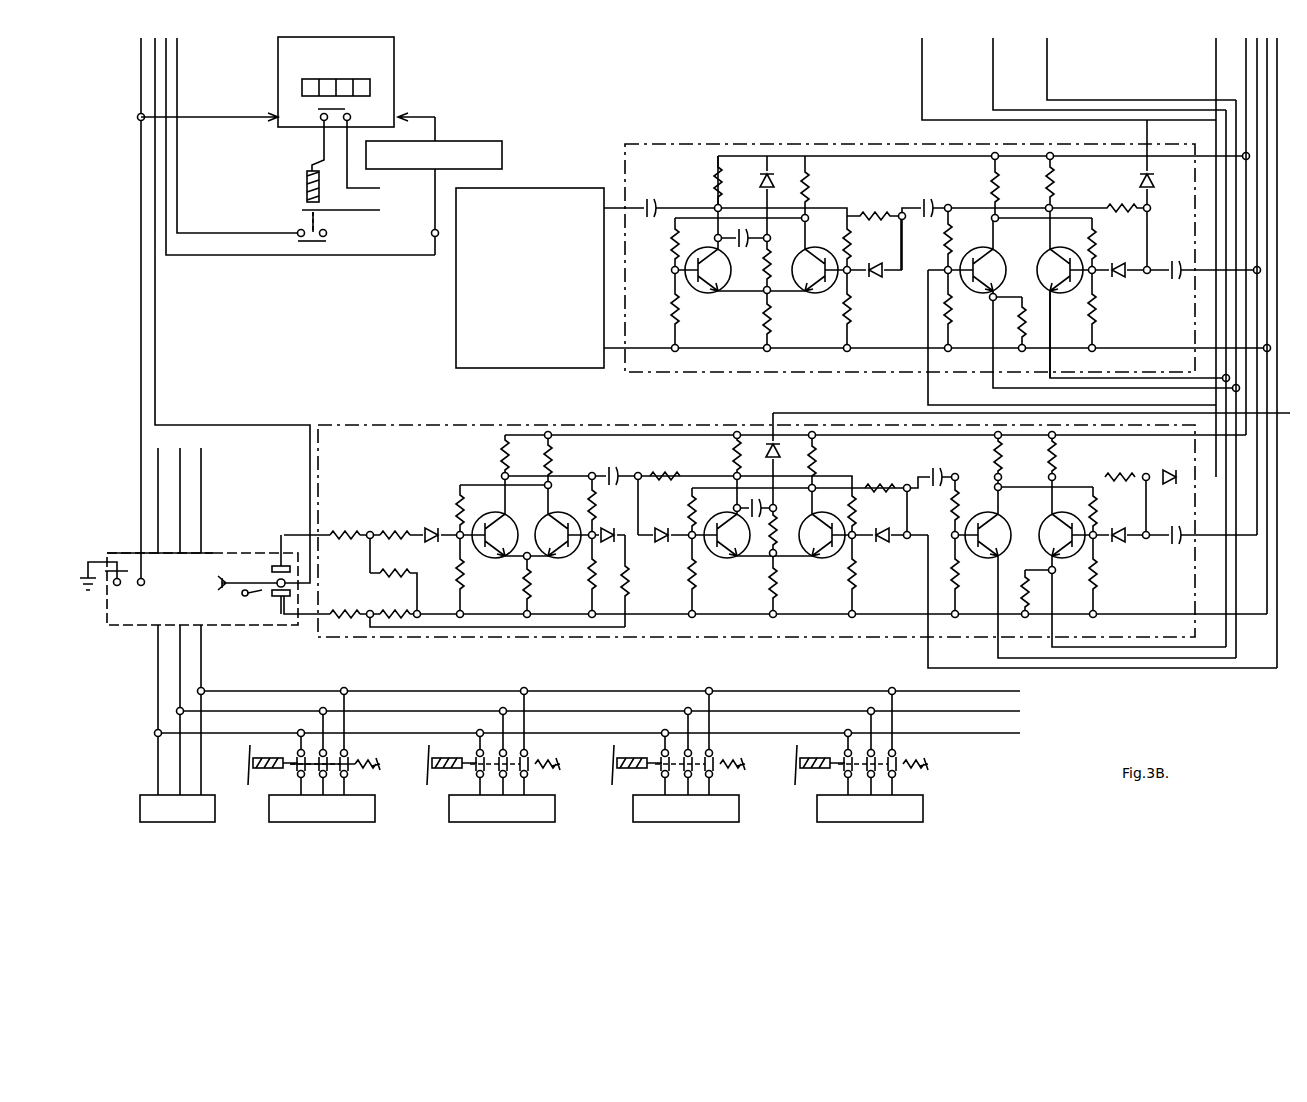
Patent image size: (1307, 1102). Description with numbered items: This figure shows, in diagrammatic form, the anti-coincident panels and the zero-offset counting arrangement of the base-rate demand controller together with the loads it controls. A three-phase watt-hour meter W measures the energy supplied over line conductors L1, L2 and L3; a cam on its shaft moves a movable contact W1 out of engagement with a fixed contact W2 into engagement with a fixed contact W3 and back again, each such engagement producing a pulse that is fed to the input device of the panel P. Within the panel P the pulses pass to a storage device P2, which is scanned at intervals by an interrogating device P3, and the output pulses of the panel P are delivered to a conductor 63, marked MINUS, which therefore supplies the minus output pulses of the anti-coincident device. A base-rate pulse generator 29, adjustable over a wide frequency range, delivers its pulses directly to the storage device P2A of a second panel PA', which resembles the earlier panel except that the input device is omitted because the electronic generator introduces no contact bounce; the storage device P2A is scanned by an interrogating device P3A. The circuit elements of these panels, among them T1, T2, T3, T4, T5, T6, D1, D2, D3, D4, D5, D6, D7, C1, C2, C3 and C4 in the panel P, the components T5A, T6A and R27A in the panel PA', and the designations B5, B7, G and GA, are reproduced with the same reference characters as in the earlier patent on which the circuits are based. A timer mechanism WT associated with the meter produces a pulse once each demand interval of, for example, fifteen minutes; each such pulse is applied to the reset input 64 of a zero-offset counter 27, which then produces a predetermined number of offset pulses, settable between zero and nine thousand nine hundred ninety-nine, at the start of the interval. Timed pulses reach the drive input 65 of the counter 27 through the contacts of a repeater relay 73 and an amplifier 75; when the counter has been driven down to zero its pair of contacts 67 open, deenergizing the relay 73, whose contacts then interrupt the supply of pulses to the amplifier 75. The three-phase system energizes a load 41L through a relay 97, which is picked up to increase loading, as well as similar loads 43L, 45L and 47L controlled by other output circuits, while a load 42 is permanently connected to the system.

The zero-offset counter 27 is at (394, 45).
The reset input 64 is at (235, 120).
The pair of contacts 67 is at (348, 108).
The drive input 65 is at (448, 132).
The amplifier 75 is at (502, 155).
The repeater relay 73 is at (320, 244).
The base-rate pulse generator 29 is at (560, 187).
The conductor 63 is at (841, 408).
The load 42 is at (215, 810).
The relay 97 is at (266, 770).
The load 41L is at (360, 793).
The load 43L is at (540, 793).
The load 45L is at (724, 793).
The load 47L is at (908, 793).
The panel P is at (362, 424).
The panel PA' is at (908, 248).
The storage device P2 is at (735, 595).
The interrogating device P3 is at (932, 450).
The storage device P2A is at (713, 320).
The interrogating device P3A is at (935, 177).
The timer mechanism WT is at (134, 590).
The line conductor L1 is at (158, 454).
The line conductor L2 is at (180, 454).
The line conductor L3 is at (201, 454).
The bus B5 is at (308, 488).
The bus B7 is at (652, 447).
The gate circuit G is at (1210, 615).
The gate circuit A GA is at (1222, 347).
The watt-hour meter W is at (244, 597).
The movable contact W1 is at (272, 580).
The fixed contact W2 is at (272, 602).
The fixed contact W3 is at (270, 568).
The minus output MINUS is at (925, 413).
The transistor T1 is at (491, 522).
The transistor T2 is at (547, 522).
The transistor T3 is at (724, 524).
The transistor T4 is at (822, 524).
The transistor T5 is at (988, 522).
The transistor T6 is at (1062, 522).
The transistor T5A is at (1000, 250).
The transistor T6A is at (1078, 238).
The resistor R27A is at (1028, 330).
The diode D1 is at (424, 526).
The diode D2 is at (615, 515).
The diode D3 is at (658, 515).
The diode D4 is at (768, 440).
The diode D5 is at (885, 527).
The diode D6 is at (1123, 528).
The diode D7 is at (1163, 465).
The capacitor C1 is at (602, 459).
The capacitor C2 is at (787, 498).
The capacitor C3 is at (902, 459).
The capacitor C4 is at (1161, 502).